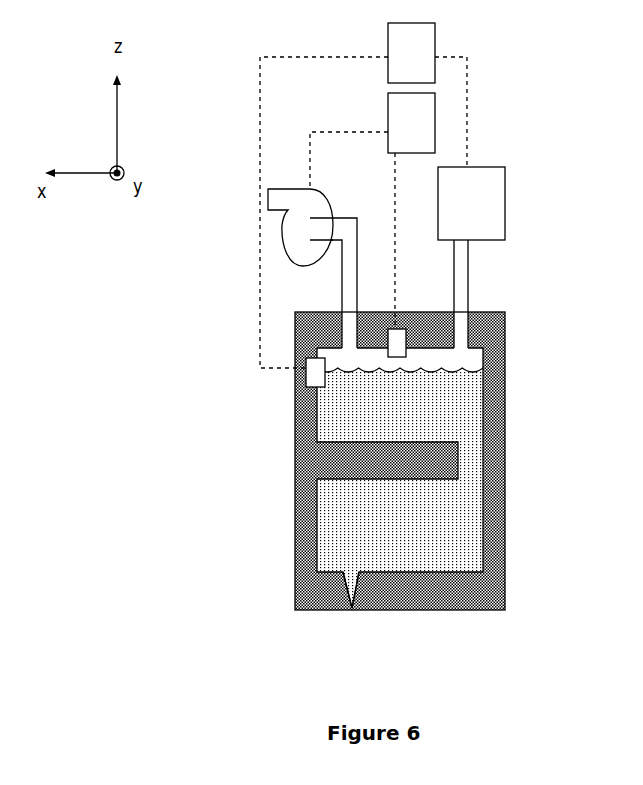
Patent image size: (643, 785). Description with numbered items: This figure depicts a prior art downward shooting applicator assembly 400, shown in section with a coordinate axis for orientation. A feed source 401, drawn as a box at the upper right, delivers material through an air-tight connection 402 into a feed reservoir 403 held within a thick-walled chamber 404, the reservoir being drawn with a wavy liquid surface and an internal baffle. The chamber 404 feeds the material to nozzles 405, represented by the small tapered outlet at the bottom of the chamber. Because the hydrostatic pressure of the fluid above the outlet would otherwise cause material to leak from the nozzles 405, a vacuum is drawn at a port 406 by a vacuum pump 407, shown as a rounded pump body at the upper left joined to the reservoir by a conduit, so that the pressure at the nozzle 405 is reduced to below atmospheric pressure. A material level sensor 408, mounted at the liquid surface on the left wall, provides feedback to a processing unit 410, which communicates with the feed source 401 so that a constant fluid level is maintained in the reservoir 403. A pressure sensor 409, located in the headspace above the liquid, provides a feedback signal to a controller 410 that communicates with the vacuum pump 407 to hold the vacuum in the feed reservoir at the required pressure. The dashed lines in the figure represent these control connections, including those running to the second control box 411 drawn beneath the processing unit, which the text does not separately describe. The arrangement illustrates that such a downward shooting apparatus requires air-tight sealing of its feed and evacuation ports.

The downward shooting applicator assembly 400 is at (215, 106).
The feed source 401 is at (505, 210).
The air-tight connection 402 is at (468, 285).
The feed reservoir 403 is at (468, 419).
The chamber 404 is at (468, 527).
The nozzles 405 is at (352, 610).
The port 406 is at (360, 233).
The vacuum pump 407 is at (297, 263).
The material level sensor 408 is at (307, 382).
The pressure sensor 409 is at (405, 329).
The processing unit 410 is at (411, 53).
The controller 411 is at (411, 123).